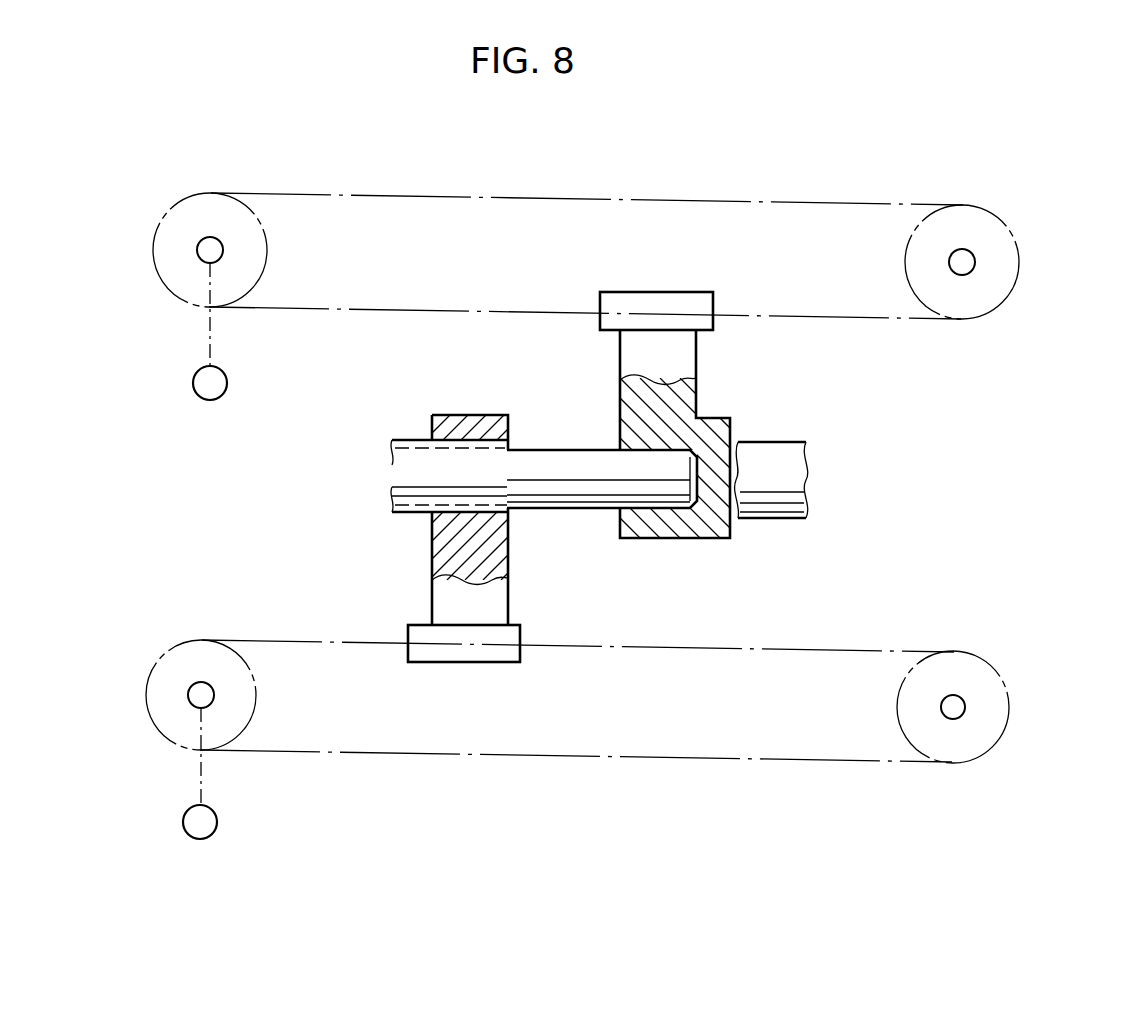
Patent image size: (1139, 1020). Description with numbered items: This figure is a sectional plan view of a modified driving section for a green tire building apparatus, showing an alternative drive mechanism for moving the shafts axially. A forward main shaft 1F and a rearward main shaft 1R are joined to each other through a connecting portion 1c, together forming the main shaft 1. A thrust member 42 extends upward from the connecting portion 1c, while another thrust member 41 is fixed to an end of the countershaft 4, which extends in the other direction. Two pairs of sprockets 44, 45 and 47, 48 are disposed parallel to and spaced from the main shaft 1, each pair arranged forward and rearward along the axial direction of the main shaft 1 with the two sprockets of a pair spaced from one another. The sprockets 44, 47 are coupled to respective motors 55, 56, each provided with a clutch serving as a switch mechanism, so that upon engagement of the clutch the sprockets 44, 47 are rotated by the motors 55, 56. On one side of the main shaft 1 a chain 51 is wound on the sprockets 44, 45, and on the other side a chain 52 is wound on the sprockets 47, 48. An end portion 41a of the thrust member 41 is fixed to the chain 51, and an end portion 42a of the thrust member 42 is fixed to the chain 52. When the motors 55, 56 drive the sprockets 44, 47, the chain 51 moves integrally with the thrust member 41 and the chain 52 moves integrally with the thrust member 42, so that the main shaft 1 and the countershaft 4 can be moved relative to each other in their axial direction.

The main shaft 1 is at (775, 545).
The forward main shaft 1F is at (547, 462).
The rearward main shaft 1R is at (781, 462).
The connecting portion 1c is at (680, 522).
The countershaft 4 is at (413, 460).
The thrust member 41 is at (677, 362).
The end portion of the thrust member 41a is at (660, 315).
The thrust member 42 is at (483, 556).
The end portion of the thrust member 42a is at (513, 634).
The sprocket 44 is at (208, 205).
The sprocket 45 is at (1003, 242).
The sprocket 47 is at (170, 705).
The sprocket 48 is at (993, 705).
The chain 51 is at (797, 198).
The chain 52 is at (733, 760).
The motor 55 is at (227, 385).
The motor 56 is at (218, 827).